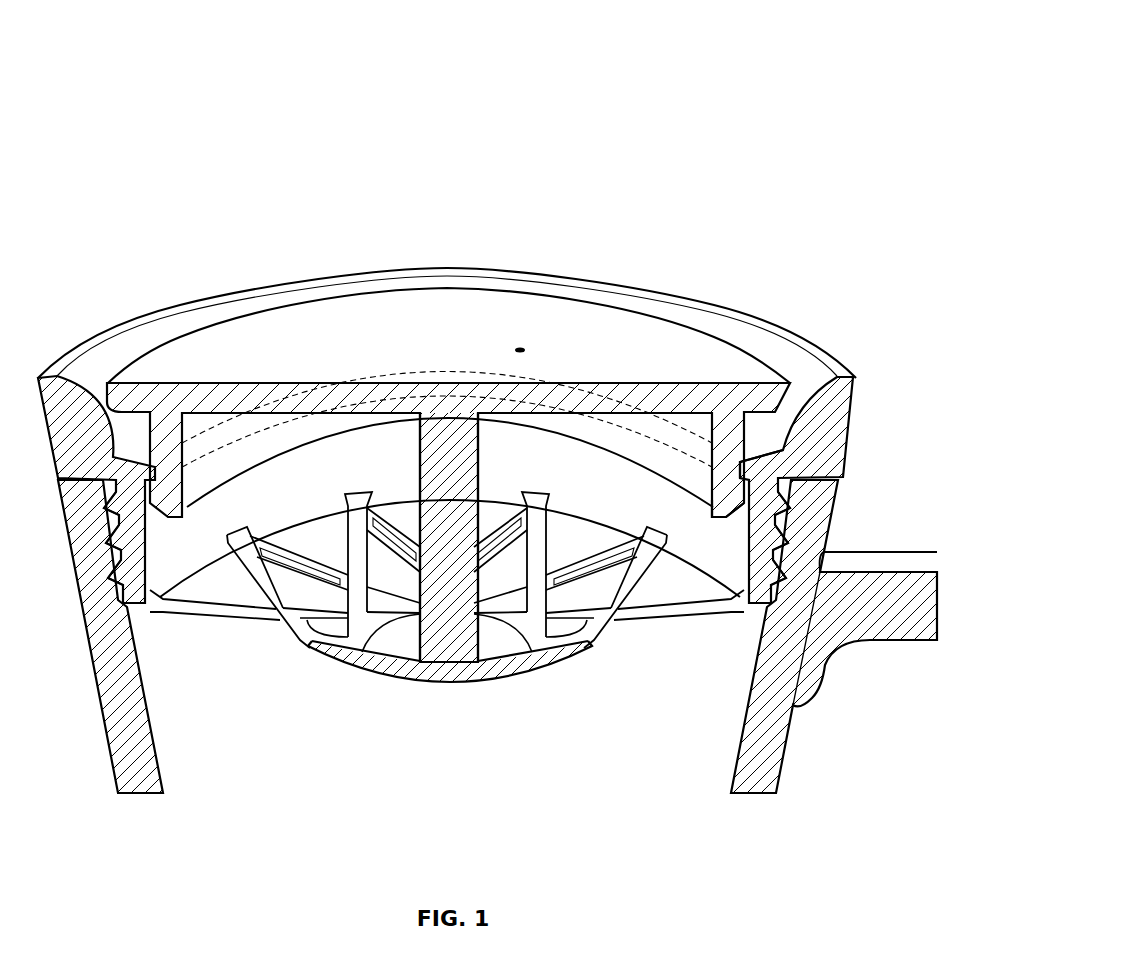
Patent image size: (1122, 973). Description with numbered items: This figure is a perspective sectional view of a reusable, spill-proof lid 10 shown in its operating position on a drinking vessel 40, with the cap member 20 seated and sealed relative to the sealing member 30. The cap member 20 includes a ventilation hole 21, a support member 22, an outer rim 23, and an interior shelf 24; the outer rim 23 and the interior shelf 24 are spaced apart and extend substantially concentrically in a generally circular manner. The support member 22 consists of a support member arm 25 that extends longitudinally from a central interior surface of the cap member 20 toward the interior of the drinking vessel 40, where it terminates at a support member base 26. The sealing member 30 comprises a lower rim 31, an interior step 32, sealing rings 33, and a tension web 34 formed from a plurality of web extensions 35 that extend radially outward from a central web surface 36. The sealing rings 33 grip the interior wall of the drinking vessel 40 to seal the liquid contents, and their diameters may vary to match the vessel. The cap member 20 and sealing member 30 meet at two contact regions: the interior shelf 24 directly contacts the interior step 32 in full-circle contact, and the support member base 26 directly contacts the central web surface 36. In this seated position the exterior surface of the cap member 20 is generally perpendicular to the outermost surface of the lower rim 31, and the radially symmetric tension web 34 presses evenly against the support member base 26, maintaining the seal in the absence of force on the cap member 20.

The lid 10 is at (150, 88).
The cap member 20 is at (438, 323).
The ventilation hole 21 is at (523, 347).
The support member 22 is at (480, 458).
The outer rim 23 is at (198, 327).
The interior shelf 24 is at (737, 506).
The support member arm 25 is at (433, 477).
The support member base 26 is at (410, 641).
The sealing member 30 is at (803, 378).
The lower rim 31 is at (838, 461).
The interior step 32 is at (767, 460).
The sealing rings 33 is at (142, 590).
The tension web 34 is at (305, 642).
The web extensions 35 is at (652, 626).
The central web surface 36 is at (448, 685).
The drinking vessel 40 is at (127, 763).